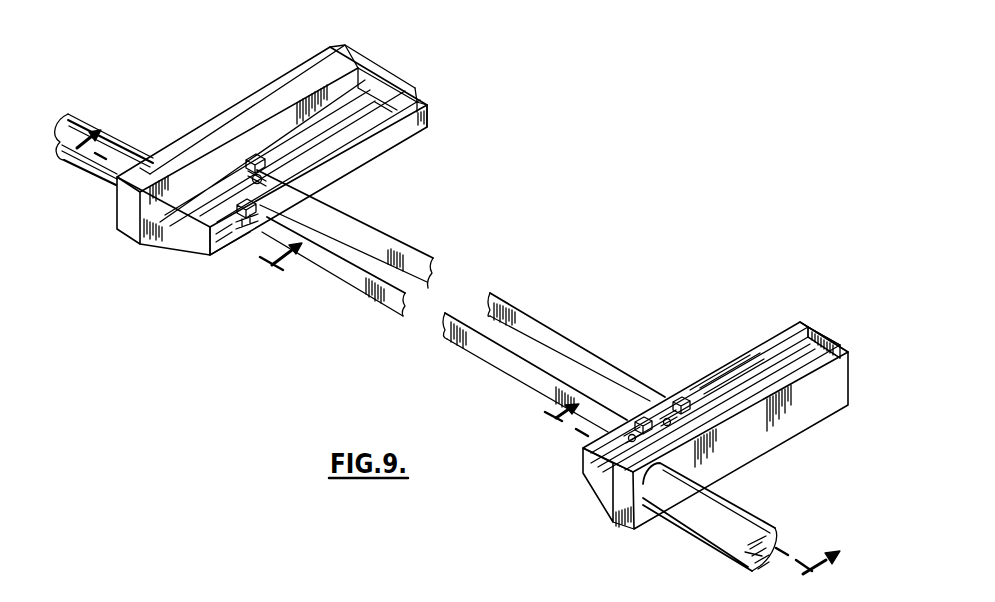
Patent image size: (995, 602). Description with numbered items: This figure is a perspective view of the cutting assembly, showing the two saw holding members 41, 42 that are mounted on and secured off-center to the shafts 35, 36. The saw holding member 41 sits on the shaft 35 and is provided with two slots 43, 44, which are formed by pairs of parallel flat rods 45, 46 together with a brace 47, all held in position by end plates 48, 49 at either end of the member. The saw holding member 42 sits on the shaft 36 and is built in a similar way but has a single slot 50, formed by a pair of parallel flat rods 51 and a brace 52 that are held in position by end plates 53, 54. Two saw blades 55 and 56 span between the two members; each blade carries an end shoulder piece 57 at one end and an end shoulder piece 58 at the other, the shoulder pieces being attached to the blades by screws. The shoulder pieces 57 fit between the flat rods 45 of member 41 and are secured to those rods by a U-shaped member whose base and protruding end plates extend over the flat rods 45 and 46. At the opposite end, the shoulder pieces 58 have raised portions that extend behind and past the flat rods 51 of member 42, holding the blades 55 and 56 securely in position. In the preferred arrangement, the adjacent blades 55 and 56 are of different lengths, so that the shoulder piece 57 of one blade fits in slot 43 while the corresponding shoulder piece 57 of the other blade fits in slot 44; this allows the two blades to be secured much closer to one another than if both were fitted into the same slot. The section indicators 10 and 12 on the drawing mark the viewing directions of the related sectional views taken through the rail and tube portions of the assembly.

The section line 10-10 (viewing direction) 10 is at (206, 181).
The section line 12-12 (viewing direction) 12 is at (708, 476).
The shaft 35 is at (122, 143).
The shaft 36 is at (743, 520).
The saw holding member 41 is at (348, 53).
The saw holding member 42 is at (852, 352).
The slot 43 is at (350, 100).
The slot 44 is at (387, 106).
The flat rods 45 is at (186, 220).
The flat rods 46 is at (222, 229).
The brace 47 is at (196, 160).
The end plate 48 is at (197, 237).
The end plate 49 is at (421, 102).
The slot 50 is at (801, 326).
The flat rods 51 is at (712, 381).
The brace 52 is at (733, 386).
The end plate 53 is at (600, 471).
The end plate 54 is at (823, 340).
The saw blade 55 is at (352, 283).
The saw blade 56 is at (376, 236).
The shoulder piece 57 is at (255, 155).
The shoulder piece 58 is at (644, 419).